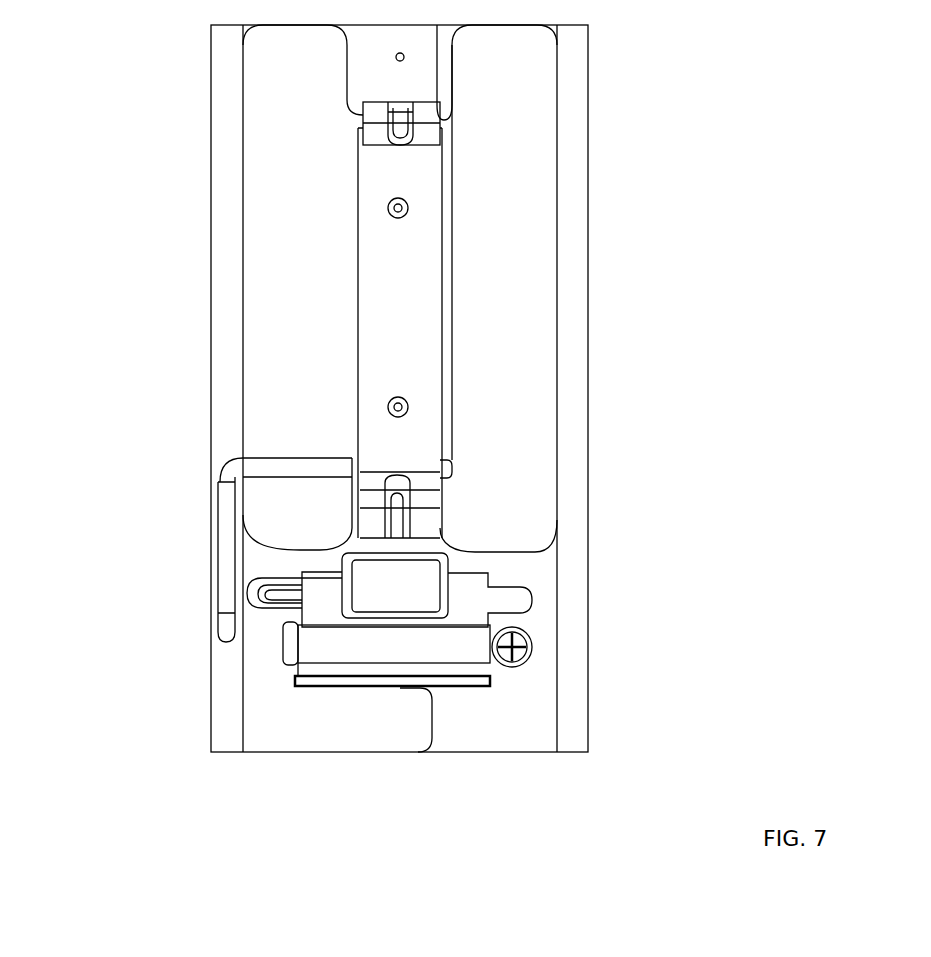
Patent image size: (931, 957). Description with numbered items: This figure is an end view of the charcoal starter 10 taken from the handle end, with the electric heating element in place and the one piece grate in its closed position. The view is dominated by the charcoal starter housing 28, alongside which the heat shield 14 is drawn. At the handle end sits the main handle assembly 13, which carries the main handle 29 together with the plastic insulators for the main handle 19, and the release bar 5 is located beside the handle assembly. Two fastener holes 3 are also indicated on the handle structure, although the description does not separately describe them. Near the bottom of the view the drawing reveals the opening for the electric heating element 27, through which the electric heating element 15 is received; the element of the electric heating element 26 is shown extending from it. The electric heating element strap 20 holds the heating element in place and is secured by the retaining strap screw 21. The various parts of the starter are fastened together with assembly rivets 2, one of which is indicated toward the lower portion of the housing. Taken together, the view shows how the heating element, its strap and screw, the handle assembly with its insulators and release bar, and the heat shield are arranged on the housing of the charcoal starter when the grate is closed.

The charcoal starter 10 is at (160, 97).
The charcoal starter housing 28 is at (203, 165).
The heat shield 14 is at (565, 214).
The main handle assembly 13 is at (447, 119).
The plastic insulators for the main handle 19 is at (415, 320).
The fastener holes 3 is at (385, 210).
The main handle 29 is at (447, 501).
The release bar 5 is at (208, 494).
The electric heating element 15 is at (324, 598).
The opening for the electric heating element 27 is at (557, 589).
The element of the electric heating element 26 is at (550, 602).
The retaining strap screw 21 is at (503, 678).
The electric heating element strap 20 is at (330, 658).
The assembly rivets 2 is at (402, 714).